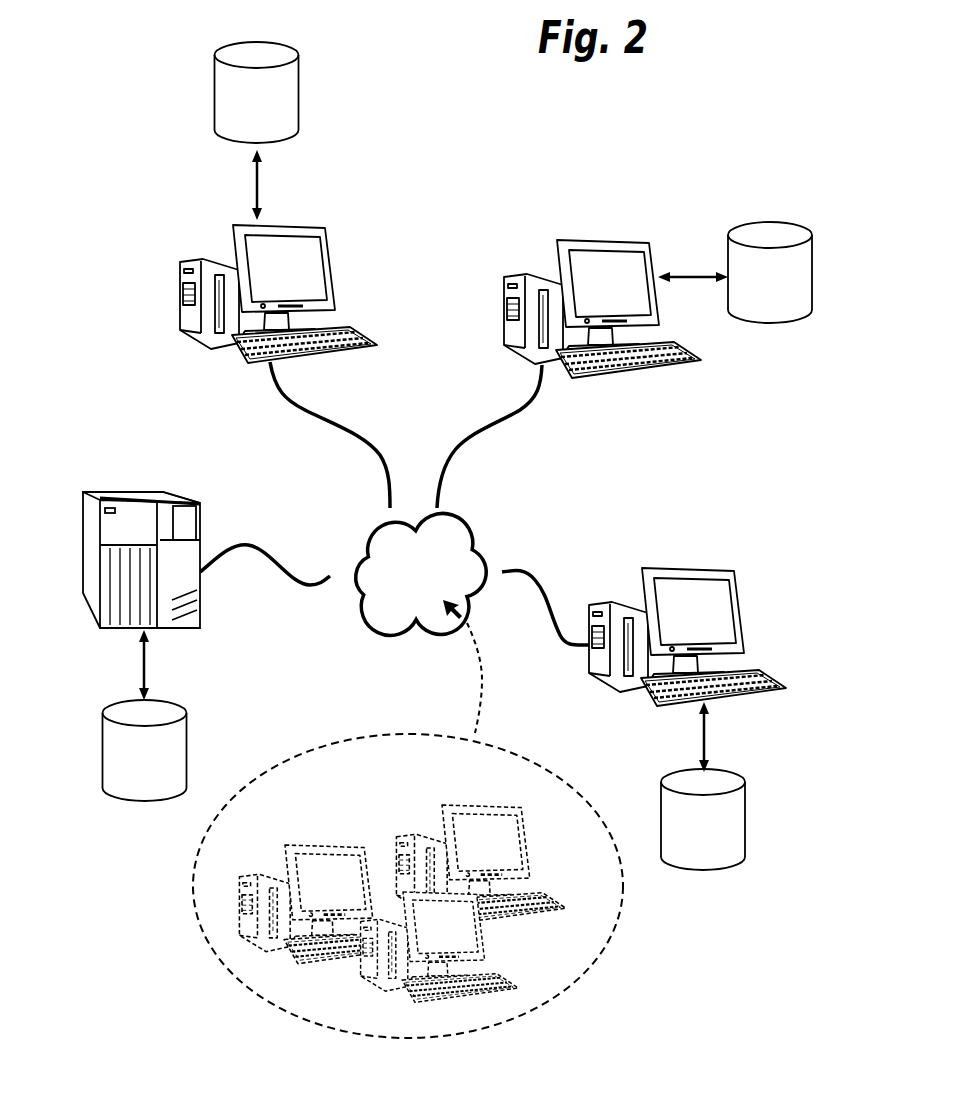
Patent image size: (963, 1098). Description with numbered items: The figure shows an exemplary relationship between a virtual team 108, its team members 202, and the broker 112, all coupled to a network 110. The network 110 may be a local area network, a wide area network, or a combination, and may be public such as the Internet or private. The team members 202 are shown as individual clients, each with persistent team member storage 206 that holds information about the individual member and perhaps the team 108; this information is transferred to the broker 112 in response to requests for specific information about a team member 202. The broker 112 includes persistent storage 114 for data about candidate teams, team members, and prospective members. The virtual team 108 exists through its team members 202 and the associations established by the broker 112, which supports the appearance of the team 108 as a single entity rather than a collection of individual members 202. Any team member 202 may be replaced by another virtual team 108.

The virtual team 108 is at (527, 826).
The network 110 is at (365, 628).
The broker 112 is at (84, 550).
The persistent storage 114 is at (102, 754).
The team member 202 is at (336, 264).
The team member storage 206 is at (215, 91).